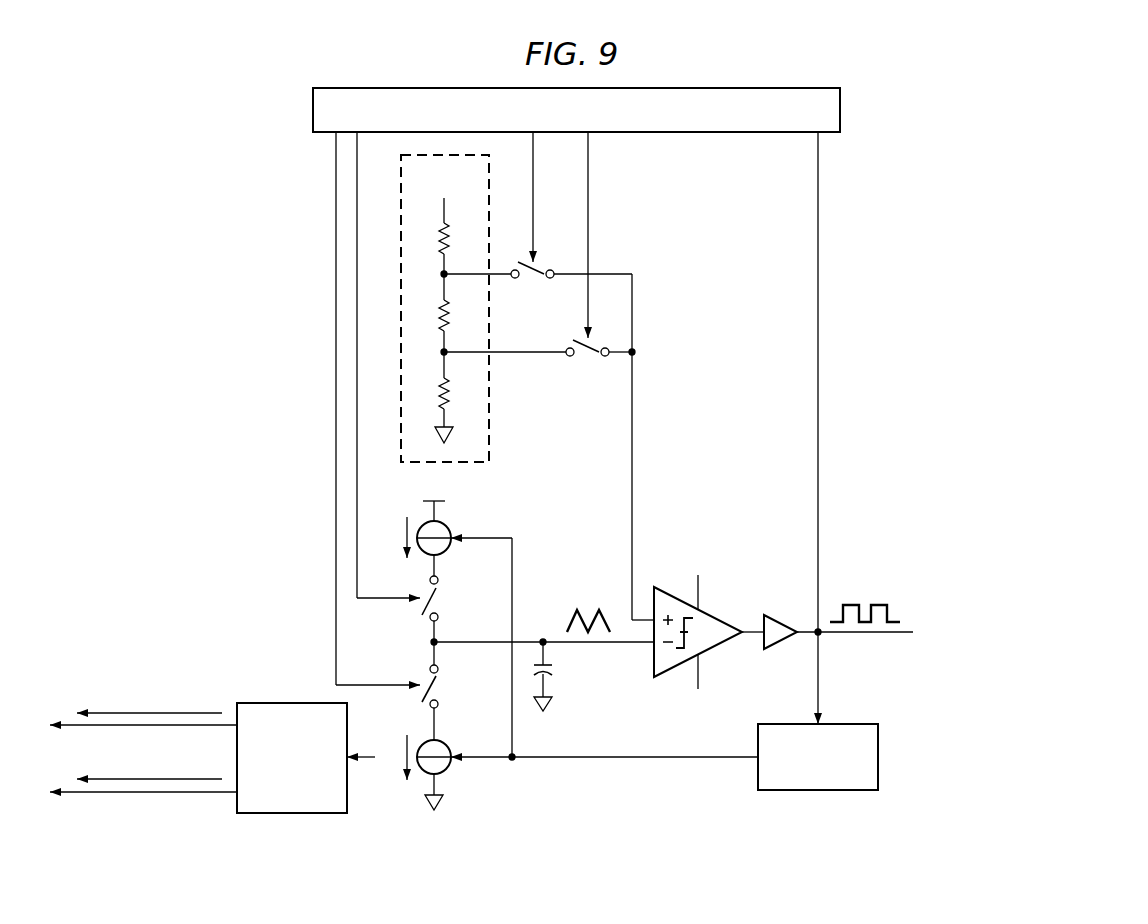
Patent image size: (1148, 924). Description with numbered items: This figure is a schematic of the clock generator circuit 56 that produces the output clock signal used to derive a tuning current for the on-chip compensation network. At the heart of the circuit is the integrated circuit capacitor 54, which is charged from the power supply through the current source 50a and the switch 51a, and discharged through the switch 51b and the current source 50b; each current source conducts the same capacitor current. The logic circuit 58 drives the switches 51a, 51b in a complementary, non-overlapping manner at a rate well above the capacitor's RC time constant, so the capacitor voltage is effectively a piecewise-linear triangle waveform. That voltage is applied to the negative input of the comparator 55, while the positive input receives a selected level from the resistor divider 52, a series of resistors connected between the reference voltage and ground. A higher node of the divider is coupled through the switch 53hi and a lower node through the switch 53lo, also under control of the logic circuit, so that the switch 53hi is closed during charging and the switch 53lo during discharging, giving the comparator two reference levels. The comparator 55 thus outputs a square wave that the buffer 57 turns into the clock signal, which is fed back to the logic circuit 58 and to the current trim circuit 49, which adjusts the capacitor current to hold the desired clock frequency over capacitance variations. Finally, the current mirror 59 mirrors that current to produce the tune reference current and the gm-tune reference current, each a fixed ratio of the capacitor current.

The clock generator circuit 56 is at (175, 195).
The logic circuit 58 is at (840, 110).
The resistor divider 52 is at (491, 410).
The switch 53hi is at (540, 280).
The switch 53lo is at (592, 359).
The current source 50a is at (442, 524).
The current source 50b is at (444, 773).
The switch 51a is at (434, 598).
The switch 51b is at (434, 687).
The integrated circuit capacitor 54 is at (551, 673).
The comparator 55 is at (718, 619).
The buffer 57 is at (777, 619).
The current mirror 59 is at (290, 703).
The current trim circuit 49 is at (878, 762).